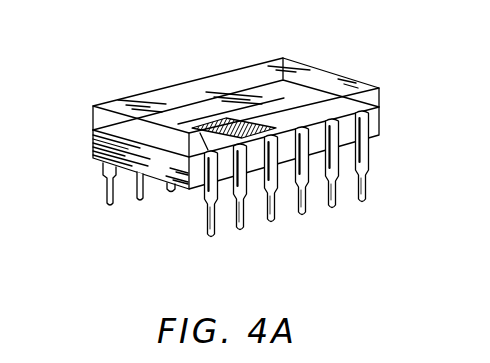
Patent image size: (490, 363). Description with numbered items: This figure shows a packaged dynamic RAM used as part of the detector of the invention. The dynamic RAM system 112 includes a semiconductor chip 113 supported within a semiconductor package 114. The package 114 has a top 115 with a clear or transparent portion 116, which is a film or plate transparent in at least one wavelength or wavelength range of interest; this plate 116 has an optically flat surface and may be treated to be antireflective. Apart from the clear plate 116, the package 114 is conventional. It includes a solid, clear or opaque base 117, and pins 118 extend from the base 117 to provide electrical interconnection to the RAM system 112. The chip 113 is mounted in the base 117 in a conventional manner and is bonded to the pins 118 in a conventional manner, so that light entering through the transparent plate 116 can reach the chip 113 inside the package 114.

The dynamic RAM system 112 is at (360, 56).
The semiconductor chip 113 is at (235, 117).
The semiconductor package 114 is at (82, 153).
The top 115 is at (100, 118).
The transparent portion 116 is at (193, 96).
The base 117 is at (183, 190).
The pins 118 is at (366, 194).